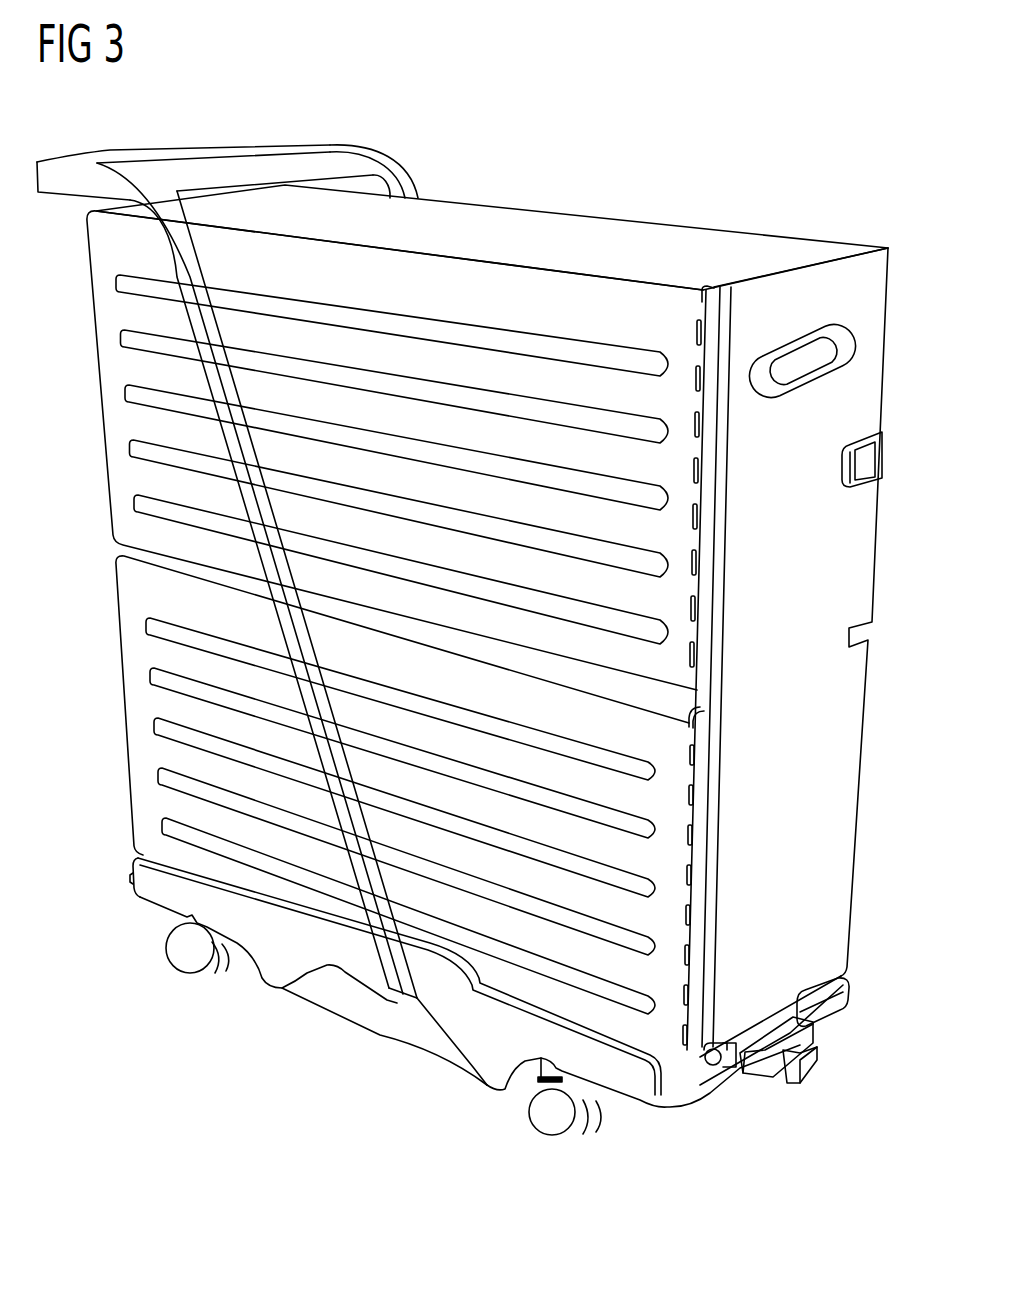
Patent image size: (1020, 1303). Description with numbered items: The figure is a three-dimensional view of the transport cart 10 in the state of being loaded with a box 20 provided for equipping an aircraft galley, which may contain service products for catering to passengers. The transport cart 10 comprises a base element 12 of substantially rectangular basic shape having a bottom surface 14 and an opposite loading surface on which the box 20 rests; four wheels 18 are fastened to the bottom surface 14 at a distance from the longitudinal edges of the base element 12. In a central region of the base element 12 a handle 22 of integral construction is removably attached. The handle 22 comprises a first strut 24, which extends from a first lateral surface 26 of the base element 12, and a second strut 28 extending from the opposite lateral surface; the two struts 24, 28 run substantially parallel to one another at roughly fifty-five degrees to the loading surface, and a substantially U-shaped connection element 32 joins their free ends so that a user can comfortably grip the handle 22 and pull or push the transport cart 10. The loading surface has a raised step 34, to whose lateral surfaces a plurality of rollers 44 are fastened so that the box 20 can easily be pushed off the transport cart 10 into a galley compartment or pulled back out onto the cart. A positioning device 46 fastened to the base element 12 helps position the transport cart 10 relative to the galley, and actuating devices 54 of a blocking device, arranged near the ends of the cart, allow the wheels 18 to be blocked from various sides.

The transport cart 10 is at (312, 1046).
The base element 12 is at (147, 897).
The bottom surface 14 is at (163, 905).
The wheels 18 is at (228, 968).
The box 20 is at (760, 247).
The handle 22 is at (77, 201).
The first strut 24 is at (263, 510).
The first lateral surface 26 is at (420, 1005).
The second strut 28 is at (409, 180).
The connection element 32 is at (180, 148).
The raised step 34 is at (817, 1017).
The rollers 44 is at (703, 1067).
The positioning device 46 is at (783, 1052).
The actuating devices 54 is at (797, 1077).